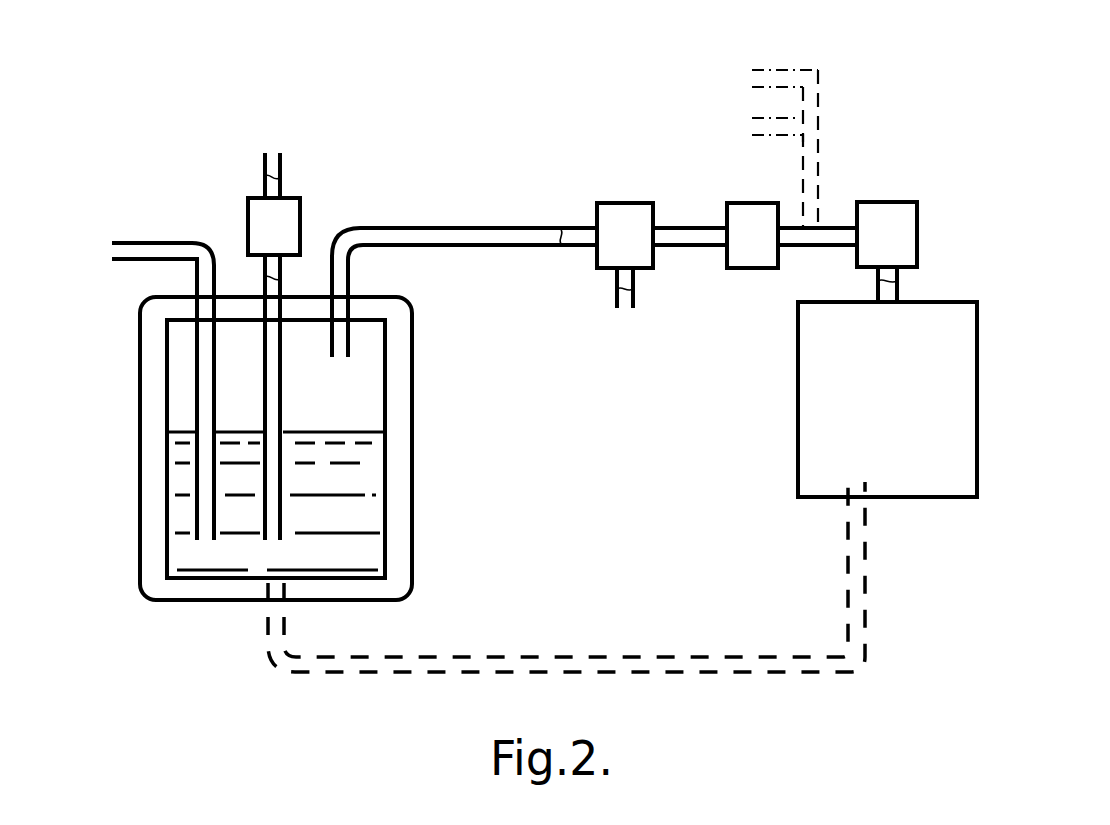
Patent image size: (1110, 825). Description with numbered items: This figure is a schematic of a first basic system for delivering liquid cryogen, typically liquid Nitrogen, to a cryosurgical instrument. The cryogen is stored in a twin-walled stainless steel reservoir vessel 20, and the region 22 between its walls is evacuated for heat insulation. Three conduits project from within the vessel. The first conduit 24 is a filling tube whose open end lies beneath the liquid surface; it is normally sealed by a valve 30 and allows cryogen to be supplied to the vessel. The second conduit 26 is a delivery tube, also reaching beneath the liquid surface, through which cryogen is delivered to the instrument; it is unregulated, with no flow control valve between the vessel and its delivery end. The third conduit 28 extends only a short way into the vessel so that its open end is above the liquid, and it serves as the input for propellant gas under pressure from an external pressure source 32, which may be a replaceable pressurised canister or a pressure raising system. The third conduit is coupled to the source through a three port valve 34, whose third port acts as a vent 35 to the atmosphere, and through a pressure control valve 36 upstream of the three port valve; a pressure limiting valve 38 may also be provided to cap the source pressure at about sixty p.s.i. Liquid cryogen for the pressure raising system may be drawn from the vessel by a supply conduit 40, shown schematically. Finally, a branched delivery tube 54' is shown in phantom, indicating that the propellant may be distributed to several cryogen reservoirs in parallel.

The reservoir vessel 20 is at (419, 461).
The region between the walls 22 is at (407, 537).
The first conduit 24 is at (277, 172).
The second conduit 26 is at (163, 245).
The third conduit 28 is at (413, 235).
The valve 30 is at (255, 203).
The pressure source 32 is at (797, 386).
The three port valve 34 is at (623, 205).
The vent 35 is at (615, 295).
The pressure control valve 36 is at (753, 205).
The pressure limiting valve 38 is at (888, 213).
The supply conduit 40 is at (743, 668).
The branched delivery tube 54' is at (820, 141).